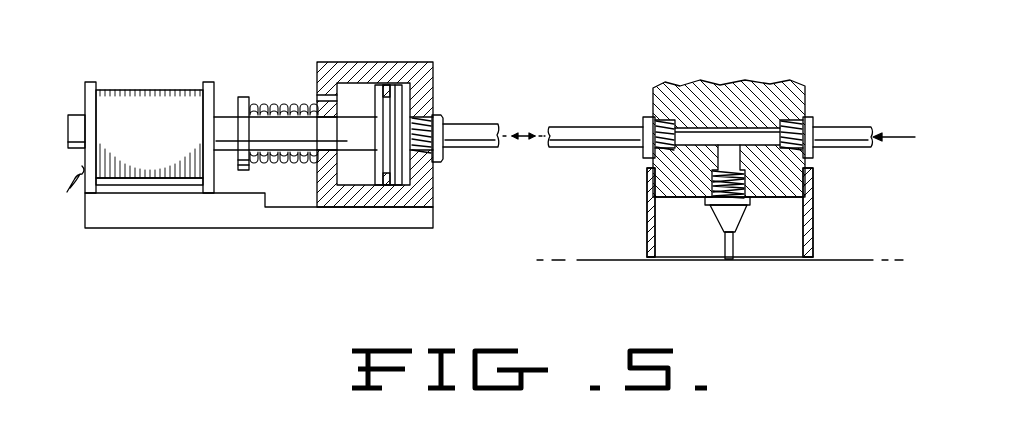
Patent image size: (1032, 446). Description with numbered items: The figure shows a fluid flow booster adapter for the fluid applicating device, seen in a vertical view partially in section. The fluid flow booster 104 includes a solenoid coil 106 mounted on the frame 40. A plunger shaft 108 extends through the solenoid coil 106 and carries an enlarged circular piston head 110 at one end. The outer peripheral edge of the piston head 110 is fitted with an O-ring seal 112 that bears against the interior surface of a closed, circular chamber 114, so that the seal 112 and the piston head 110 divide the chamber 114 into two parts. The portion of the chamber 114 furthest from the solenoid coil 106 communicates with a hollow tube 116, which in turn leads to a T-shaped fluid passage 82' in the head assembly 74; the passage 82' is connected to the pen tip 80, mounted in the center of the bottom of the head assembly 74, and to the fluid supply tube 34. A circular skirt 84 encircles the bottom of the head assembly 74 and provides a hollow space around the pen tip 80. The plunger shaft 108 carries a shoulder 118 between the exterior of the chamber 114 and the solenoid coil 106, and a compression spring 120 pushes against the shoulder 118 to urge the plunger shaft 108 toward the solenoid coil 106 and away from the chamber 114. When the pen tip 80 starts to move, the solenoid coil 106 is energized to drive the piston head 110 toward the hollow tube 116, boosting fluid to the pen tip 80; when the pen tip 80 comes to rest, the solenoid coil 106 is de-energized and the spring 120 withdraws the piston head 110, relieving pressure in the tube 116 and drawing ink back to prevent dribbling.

The tube 34 is at (863, 128).
The frame 40 is at (135, 222).
The head assembly 74 is at (807, 80).
The pen tip 80 is at (733, 248).
The fluid passage 82' is at (727, 94).
The skirt 84 is at (647, 218).
The fluid flow booster 104 is at (221, 234).
The solenoid coil 106 is at (143, 90).
The plunger shaft 108 is at (76, 115).
The piston head 110 is at (397, 97).
The O-ring seal 112 is at (388, 87).
The chamber 114 is at (347, 198).
The hollow tube 116 is at (468, 127).
The shoulder 118 is at (243, 97).
The compression spring 120 is at (276, 100).